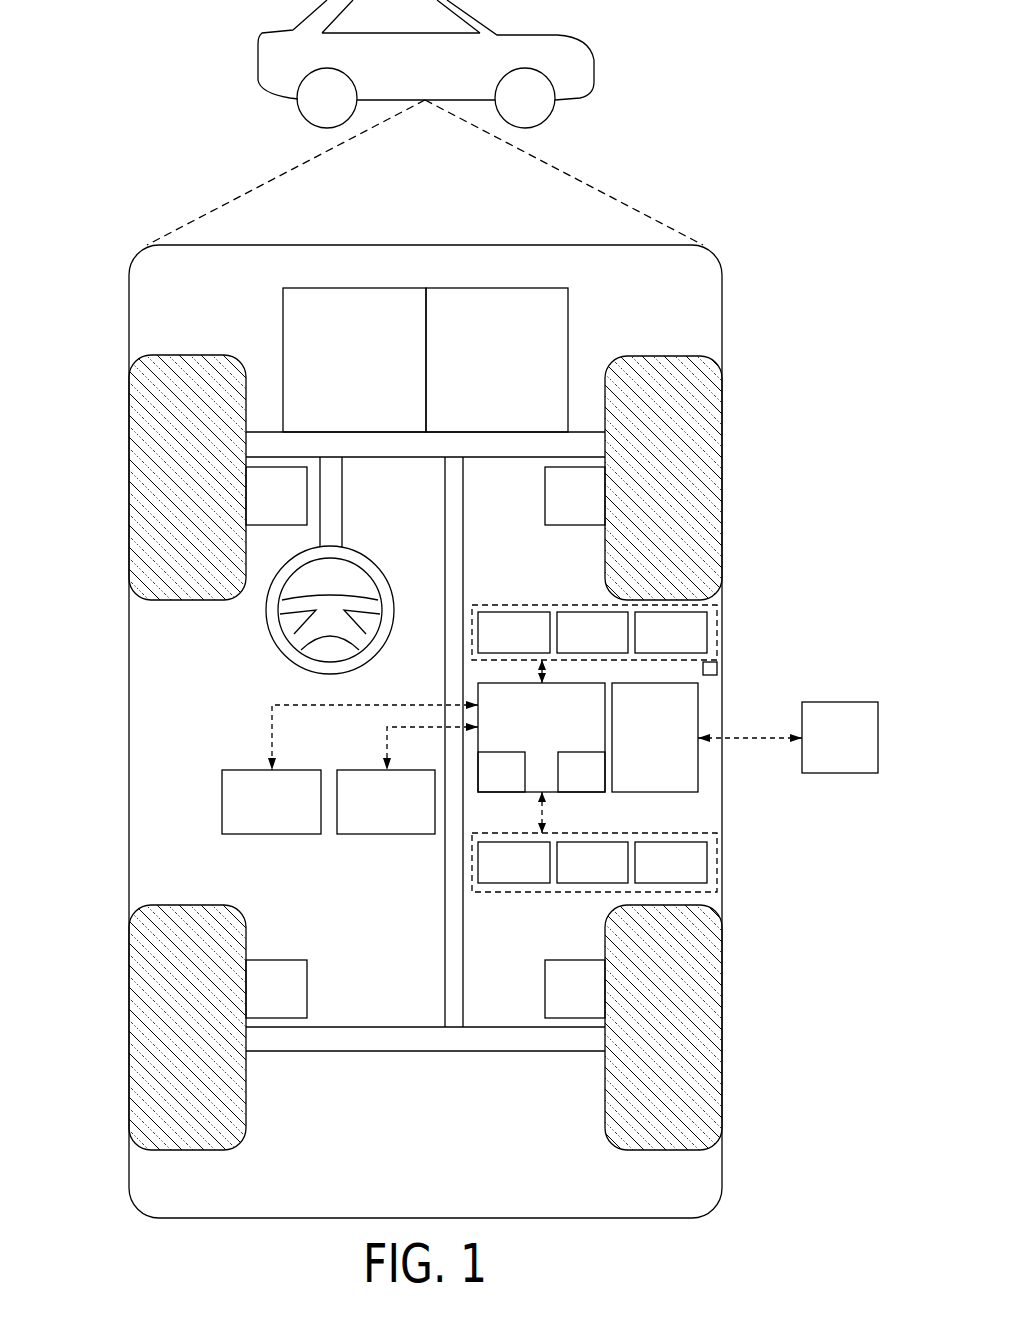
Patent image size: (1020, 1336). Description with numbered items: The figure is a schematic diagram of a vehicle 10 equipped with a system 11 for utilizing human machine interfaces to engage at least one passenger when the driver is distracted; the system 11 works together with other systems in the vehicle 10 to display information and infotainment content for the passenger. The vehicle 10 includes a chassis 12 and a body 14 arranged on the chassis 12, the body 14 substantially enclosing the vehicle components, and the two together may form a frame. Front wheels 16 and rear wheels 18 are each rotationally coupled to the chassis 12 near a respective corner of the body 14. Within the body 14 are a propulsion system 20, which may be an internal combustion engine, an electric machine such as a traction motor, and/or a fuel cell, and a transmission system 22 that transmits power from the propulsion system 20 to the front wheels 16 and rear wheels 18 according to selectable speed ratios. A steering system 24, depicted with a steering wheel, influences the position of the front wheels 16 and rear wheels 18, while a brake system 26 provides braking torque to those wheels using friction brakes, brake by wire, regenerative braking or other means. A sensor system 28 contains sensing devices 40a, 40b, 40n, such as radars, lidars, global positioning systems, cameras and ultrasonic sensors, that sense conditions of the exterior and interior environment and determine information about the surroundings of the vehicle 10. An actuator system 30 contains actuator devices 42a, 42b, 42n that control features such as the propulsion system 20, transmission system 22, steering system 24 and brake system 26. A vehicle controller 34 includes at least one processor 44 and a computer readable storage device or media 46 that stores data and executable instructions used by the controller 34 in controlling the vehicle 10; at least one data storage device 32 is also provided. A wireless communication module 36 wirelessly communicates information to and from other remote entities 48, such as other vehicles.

The vehicle 10 is at (412, 74).
The system 11 is at (258, 814).
The chassis 12 is at (443, 932).
The body 14 is at (129, 734).
The front wheels 16 is at (188, 355).
The rear wheels 18 is at (187, 1152).
The propulsion system 20 is at (341, 372).
The transmission system 22 is at (484, 372).
The steering system 24 is at (364, 493).
The brake system 26 is at (263, 508).
The sensor system 28 is at (594, 616).
The actuator system 30 is at (594, 883).
The data storage device 32 is at (373, 814).
The vehicle controller 34 is at (541, 737).
The wireless communication module 36 is at (642, 750).
The sensing device 40a is at (494, 644).
The sensing device 40b is at (572, 644).
The sensing device 40n is at (651, 644).
The actuator device 42a is at (494, 874).
The actuator device 42b is at (572, 874).
The actuator device 42n is at (651, 874).
The processor 44 is at (488, 784).
The computer readable storage device or media 46 is at (568, 784).
The remote entities 48 is at (827, 750).